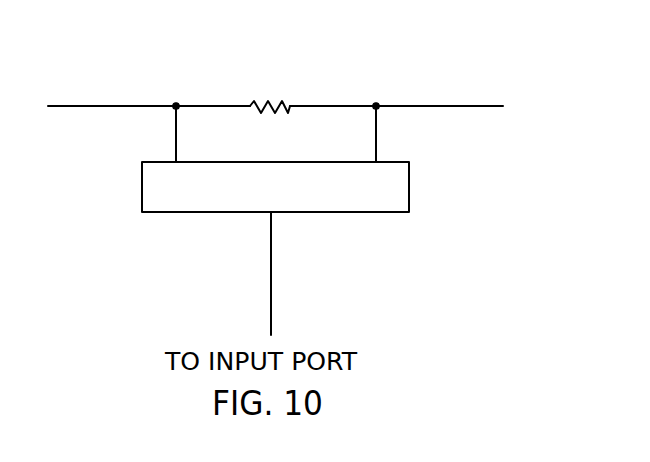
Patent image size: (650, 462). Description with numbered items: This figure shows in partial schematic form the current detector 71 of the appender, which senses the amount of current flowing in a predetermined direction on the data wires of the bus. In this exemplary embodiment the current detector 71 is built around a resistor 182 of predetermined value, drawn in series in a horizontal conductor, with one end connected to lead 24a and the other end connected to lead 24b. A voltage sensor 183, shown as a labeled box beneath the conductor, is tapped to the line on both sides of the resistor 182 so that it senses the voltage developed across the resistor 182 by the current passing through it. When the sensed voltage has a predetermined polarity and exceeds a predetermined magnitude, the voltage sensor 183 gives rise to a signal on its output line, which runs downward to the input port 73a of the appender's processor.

The current detector 71 is at (205, 50).
The lead 24b is at (98, 106).
The lead 24a is at (438, 106).
The resistor 182 is at (260, 100).
The voltage sensor 183 is at (410, 183).
The input port 73a is at (271, 268).